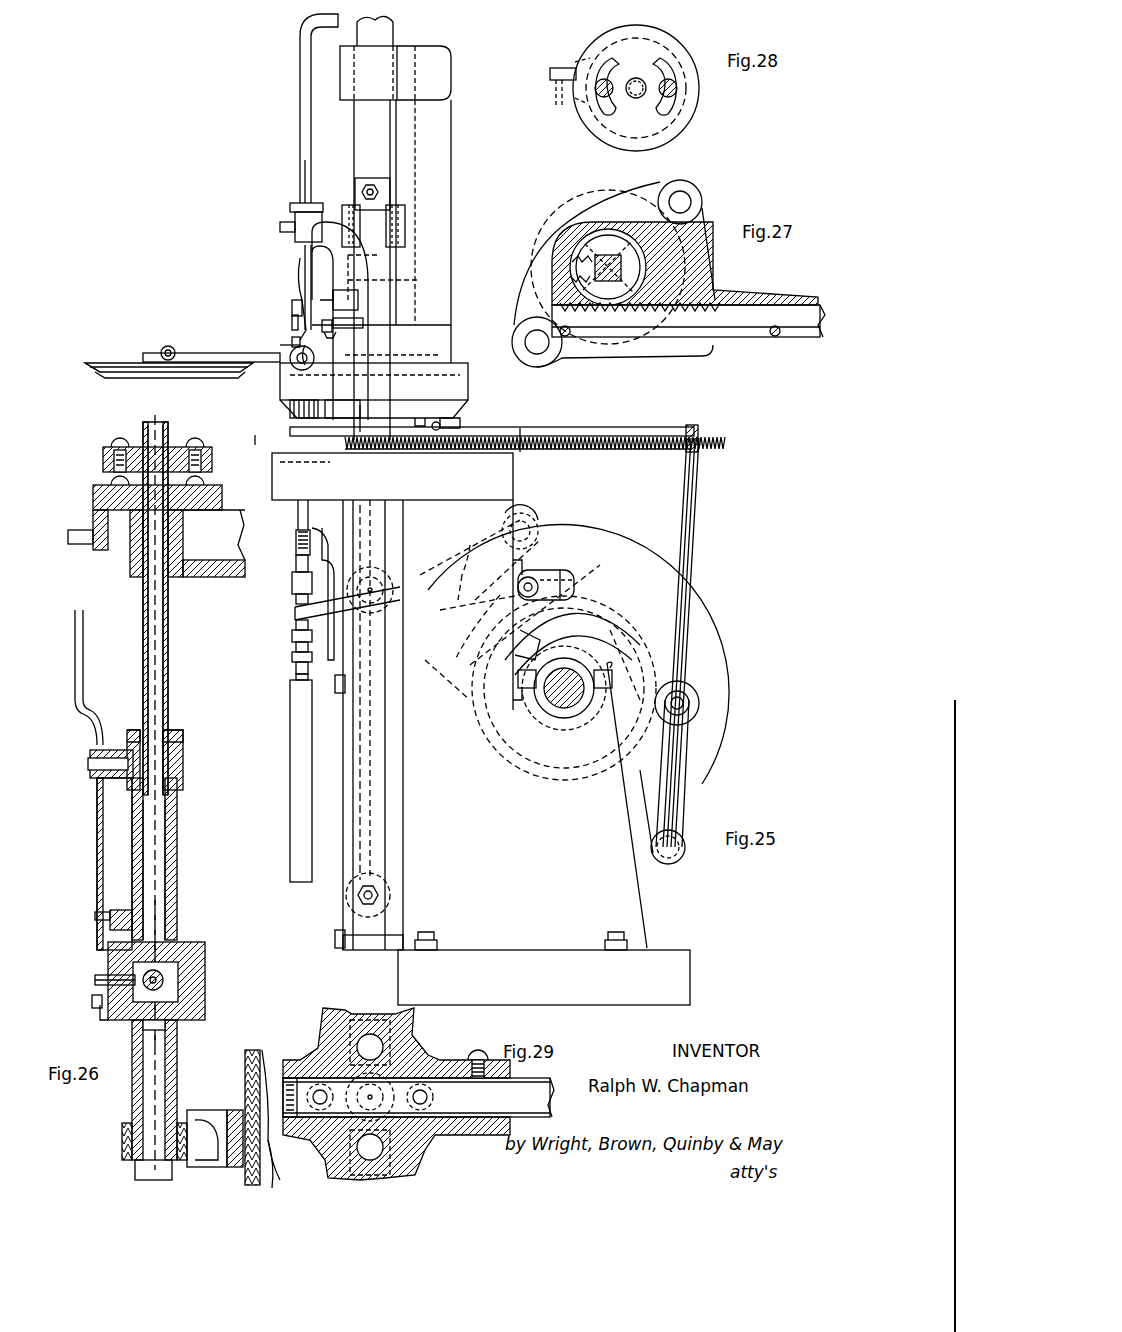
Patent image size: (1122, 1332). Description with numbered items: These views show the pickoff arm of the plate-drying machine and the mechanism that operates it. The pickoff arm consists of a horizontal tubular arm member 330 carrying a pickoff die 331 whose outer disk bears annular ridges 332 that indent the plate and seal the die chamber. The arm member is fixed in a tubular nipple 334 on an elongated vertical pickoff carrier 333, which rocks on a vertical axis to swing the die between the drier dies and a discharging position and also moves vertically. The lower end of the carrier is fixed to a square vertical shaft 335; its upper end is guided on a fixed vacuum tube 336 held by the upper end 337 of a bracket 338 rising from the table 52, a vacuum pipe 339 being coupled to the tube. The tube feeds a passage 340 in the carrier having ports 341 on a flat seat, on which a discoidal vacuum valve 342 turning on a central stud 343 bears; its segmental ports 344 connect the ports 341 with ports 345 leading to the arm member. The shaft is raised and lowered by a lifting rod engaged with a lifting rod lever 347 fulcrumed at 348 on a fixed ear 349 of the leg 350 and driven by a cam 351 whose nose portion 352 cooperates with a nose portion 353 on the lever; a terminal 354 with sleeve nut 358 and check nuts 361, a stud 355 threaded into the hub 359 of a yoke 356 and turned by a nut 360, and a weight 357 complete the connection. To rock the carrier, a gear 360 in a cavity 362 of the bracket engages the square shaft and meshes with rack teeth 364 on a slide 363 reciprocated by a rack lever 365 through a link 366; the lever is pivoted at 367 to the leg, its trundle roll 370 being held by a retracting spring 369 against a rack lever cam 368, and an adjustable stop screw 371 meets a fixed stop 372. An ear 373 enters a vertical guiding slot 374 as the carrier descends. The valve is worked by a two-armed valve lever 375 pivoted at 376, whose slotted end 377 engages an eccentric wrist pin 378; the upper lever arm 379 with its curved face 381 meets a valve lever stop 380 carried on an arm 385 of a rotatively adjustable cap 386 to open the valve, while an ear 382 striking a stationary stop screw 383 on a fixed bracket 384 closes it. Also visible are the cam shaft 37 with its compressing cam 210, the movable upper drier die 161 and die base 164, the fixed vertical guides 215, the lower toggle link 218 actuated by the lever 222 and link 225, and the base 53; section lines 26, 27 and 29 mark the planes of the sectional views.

In FIG. 25, the section line 26 is at (274, 154).
In FIG. 25, the section line 27 is at (244, 424).
In FIG. 26, the section line 29 is at (164, 904).
In FIG. 25, the cam shaft 37 is at (558, 703).
In FIG. 25, the table 52 is at (505, 478).
In FIG. 25, the base 53 is at (680, 978).
In FIG. 25, the movable upper drier die 161 is at (440, 345).
In FIG. 25, the die base 164 is at (460, 380).
In FIG. 25, the compressing cam 210 is at (728, 660).
In FIG. 25, the fixed vertical guides 215 is at (345, 822).
In FIG. 25, the lower link 218 is at (395, 805).
In FIG. 25, the lever 222 is at (685, 805).
In FIG. 25, the link 225 is at (530, 608).
In FIG. 25, the tubular arm member 330 is at (180, 353).
In FIG. 26, the tubular arm member 330 is at (165, 980).
In FIG. 29, the tubular arm member 330 is at (458, 1060).
In FIG. 25, the pickoff die 331 is at (205, 372).
In FIG. 25, the annular ridges 332 is at (92, 368).
In FIG. 25, the pickoff carrier 333 is at (296, 300).
In FIG. 26, the pickoff carrier 333 is at (177, 858).
In FIG. 25, the tubular nipple 334 is at (292, 353).
In FIG. 29, the tubular nipple 334 is at (400, 1050).
In FIG. 25, the vertical shaft 335 is at (297, 518).
In FIG. 25, the vacuum tube 336 is at (310, 252).
In FIG. 26, the vacuum tube 336 is at (170, 680).
In FIG. 26, the upper end of bracket 337 is at (135, 545).
In FIG. 25, the bracket 338 is at (360, 300).
In FIG. 26, the bracket 338 is at (268, 1170).
In FIG. 27, the bracket 338 is at (705, 272).
In FIG. 29, the bracket 338 is at (292, 1163).
In FIG. 25, the vacuum pipe 339 is at (300, 108).
In FIG. 26, the vacuum pipe 339 is at (150, 432).
In FIG. 26, the passage 340 is at (162, 830).
In FIG. 26, the ports 341 is at (195, 945).
In FIG. 29, the ports 341 is at (368, 1040).
In FIG. 25, the vacuum valve 342 is at (312, 354).
In FIG. 26, the vacuum valve 342 is at (100, 972).
In FIG. 26, the central stud 343 is at (110, 982).
In FIG. 26, the segmental ports 344 is at (110, 945).
In FIG. 29, the ports 345 is at (318, 1090).
In FIG. 25, the lifting rod lever 347 is at (395, 598).
In FIG. 25, the fulcrum 348 is at (540, 580).
In FIG. 25, the fixed ear 349 is at (525, 560).
In FIG. 25, the leg 350 is at (645, 885).
In FIG. 25, the cam 351 is at (580, 620).
In FIG. 25, the nose portion 352 is at (535, 645).
In FIG. 25, the nose portion 353 is at (590, 568).
In FIG. 25, the lifting rod terminal 354 is at (295, 610).
In FIG. 25, the stud 355 is at (296, 646).
In FIG. 25, the yoke 356 is at (300, 660).
In FIG. 25, the weight 357 is at (300, 685).
In FIG. 25, the sleeve nut 358 is at (292, 584).
In FIG. 25, the hub 359 is at (319, 781).
In FIG. 25, the gear 360 is at (296, 630).
In FIG. 27, the gear 360 is at (580, 250).
In FIG. 25, the check nuts 361 is at (316, 548).
In FIG. 27, the cavity 362 is at (596, 238).
In FIG. 25, the slide 363 is at (407, 412).
In FIG. 27, the slide 363 is at (726, 318).
In FIG. 27, the rack teeth 364 is at (690, 310).
In FIG. 25, the rack lever 365 is at (688, 512).
In FIG. 25, the link 366 is at (570, 430).
In FIG. 25, the pivot 367 is at (445, 427).
In FIG. 25, the rack lever cam 368 is at (650, 733).
In FIG. 25, the retracting spring 369 is at (528, 440).
In FIG. 25, the trundle roll 370 is at (700, 703).
In FIG. 25, the adjustable stop screw 371 is at (455, 418).
In FIG. 25, the fixed stop 372 is at (360, 408).
In FIG. 25, the ear 373 is at (312, 400).
In FIG. 26, the ear 373 is at (192, 1135).
In FIG. 26, the vertical guiding slot 374 is at (220, 1118).
In FIG. 25, the valve lever 375 is at (294, 327).
In FIG. 26, the valve lever 375 is at (97, 842).
In FIG. 26, the pivot 376 is at (95, 768).
In FIG. 26, the slotted end 377 is at (95, 1008).
In FIG. 25, the eccentric wrist pin 378 is at (305, 360).
In FIG. 26, the eccentric wrist pin 378 is at (108, 1022).
In FIG. 25, the upper lever arm 379 is at (325, 287).
In FIG. 26, the upper lever arm 379 is at (83, 655).
In FIG. 25, the valve lever stop 380 is at (288, 232).
In FIG. 26, the valve lever stop 380 is at (82, 540).
In FIG. 28, the valve lever stop 380 is at (550, 74).
In FIG. 25, the curved face 381 is at (298, 278).
In FIG. 25, the ear 382 is at (322, 300).
In FIG. 25, the stationary stop screw 383 is at (346, 320).
In FIG. 25, the fixed bracket 384 is at (370, 330).
In FIG. 26, the arm 385 is at (100, 500).
In FIG. 26, the cap 386 is at (215, 492).
In FIG. 28, the cap 386 is at (680, 122).